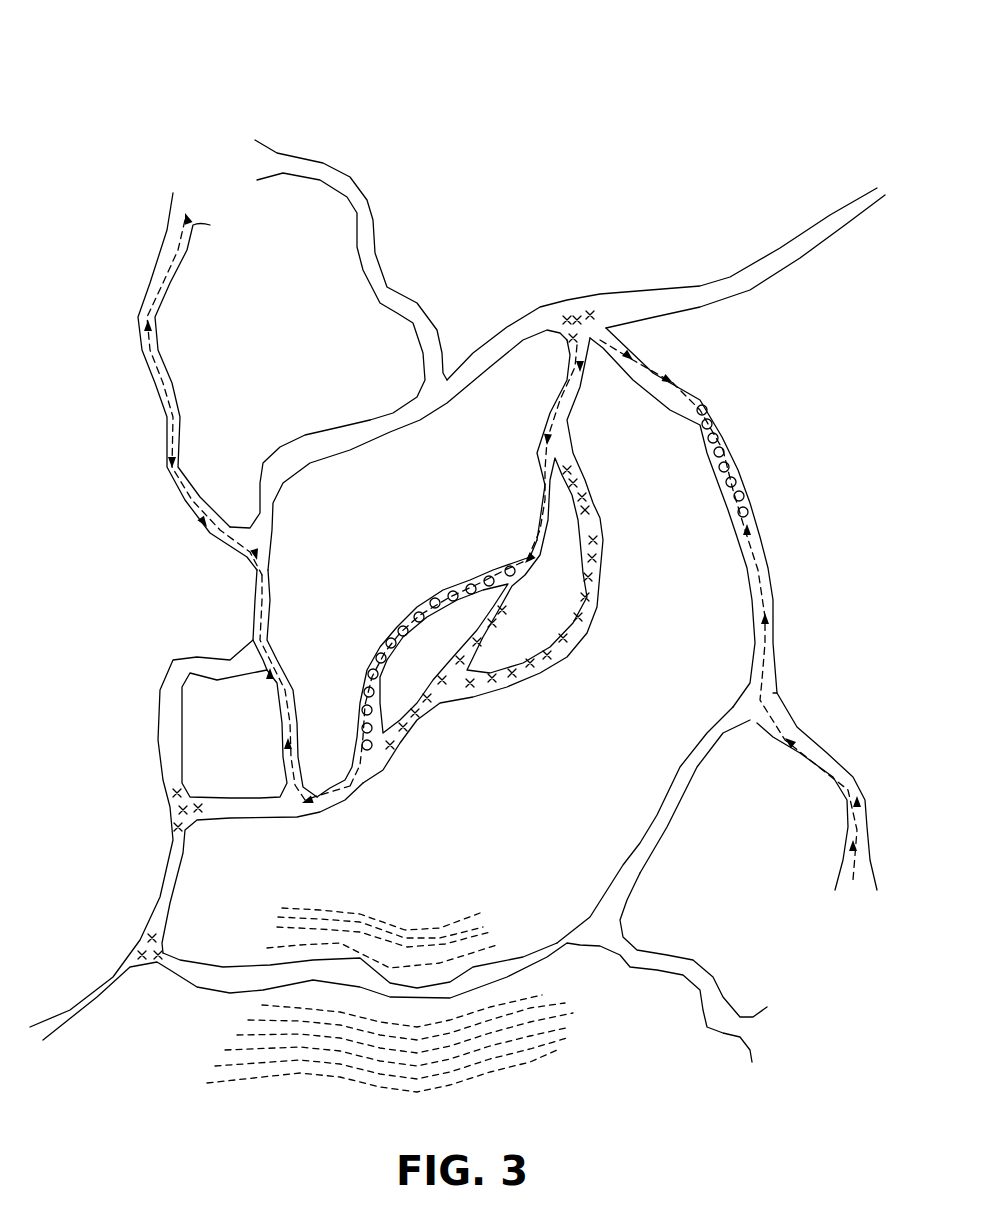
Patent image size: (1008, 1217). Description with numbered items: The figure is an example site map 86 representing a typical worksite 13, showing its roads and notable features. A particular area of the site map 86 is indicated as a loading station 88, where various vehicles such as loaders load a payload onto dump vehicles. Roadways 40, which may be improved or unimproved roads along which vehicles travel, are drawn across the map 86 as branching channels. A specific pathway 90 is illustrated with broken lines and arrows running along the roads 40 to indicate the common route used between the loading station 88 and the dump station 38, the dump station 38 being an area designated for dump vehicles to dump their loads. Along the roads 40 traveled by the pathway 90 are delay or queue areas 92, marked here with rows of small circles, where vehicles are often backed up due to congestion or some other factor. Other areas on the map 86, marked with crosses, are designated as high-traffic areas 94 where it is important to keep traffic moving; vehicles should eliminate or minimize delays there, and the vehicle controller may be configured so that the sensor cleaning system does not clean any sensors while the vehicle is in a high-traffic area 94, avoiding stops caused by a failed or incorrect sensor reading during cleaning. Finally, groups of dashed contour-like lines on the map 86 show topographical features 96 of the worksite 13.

The site map 86 is at (455, 55).
The worksite 13 is at (395, 195).
The dump station 38 is at (200, 371).
The roadways 40 is at (598, 218).
The high-traffic areas 94 is at (572, 285).
The queue area 92 is at (768, 442).
The pathway 90 is at (165, 400).
The topographical features 96 is at (441, 900).
The loading station 88 is at (838, 931).